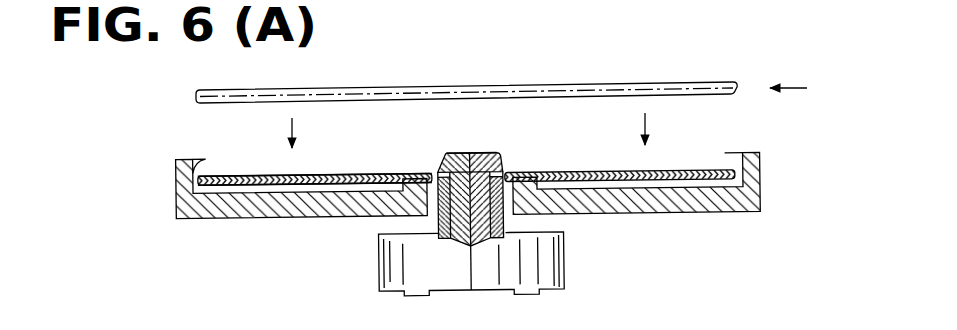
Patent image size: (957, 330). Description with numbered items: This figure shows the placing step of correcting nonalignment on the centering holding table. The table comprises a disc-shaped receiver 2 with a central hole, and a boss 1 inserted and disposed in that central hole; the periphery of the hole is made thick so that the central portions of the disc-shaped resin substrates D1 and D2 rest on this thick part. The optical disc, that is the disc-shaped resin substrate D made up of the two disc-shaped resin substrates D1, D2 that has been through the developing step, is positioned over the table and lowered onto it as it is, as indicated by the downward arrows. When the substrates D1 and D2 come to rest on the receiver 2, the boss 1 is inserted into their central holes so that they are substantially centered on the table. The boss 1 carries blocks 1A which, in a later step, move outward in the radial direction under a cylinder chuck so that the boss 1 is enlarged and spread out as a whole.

The boss 1 is at (497, 143).
The blocks of the boss 1A is at (440, 168).
The disc-shaped receiver 2 is at (722, 207).
The disc-shaped resin substrate D is at (685, 164).
The disc-shaped resin substrate D1 is at (315, 221).
The disc-shaped resin substrate D2 is at (231, 226).